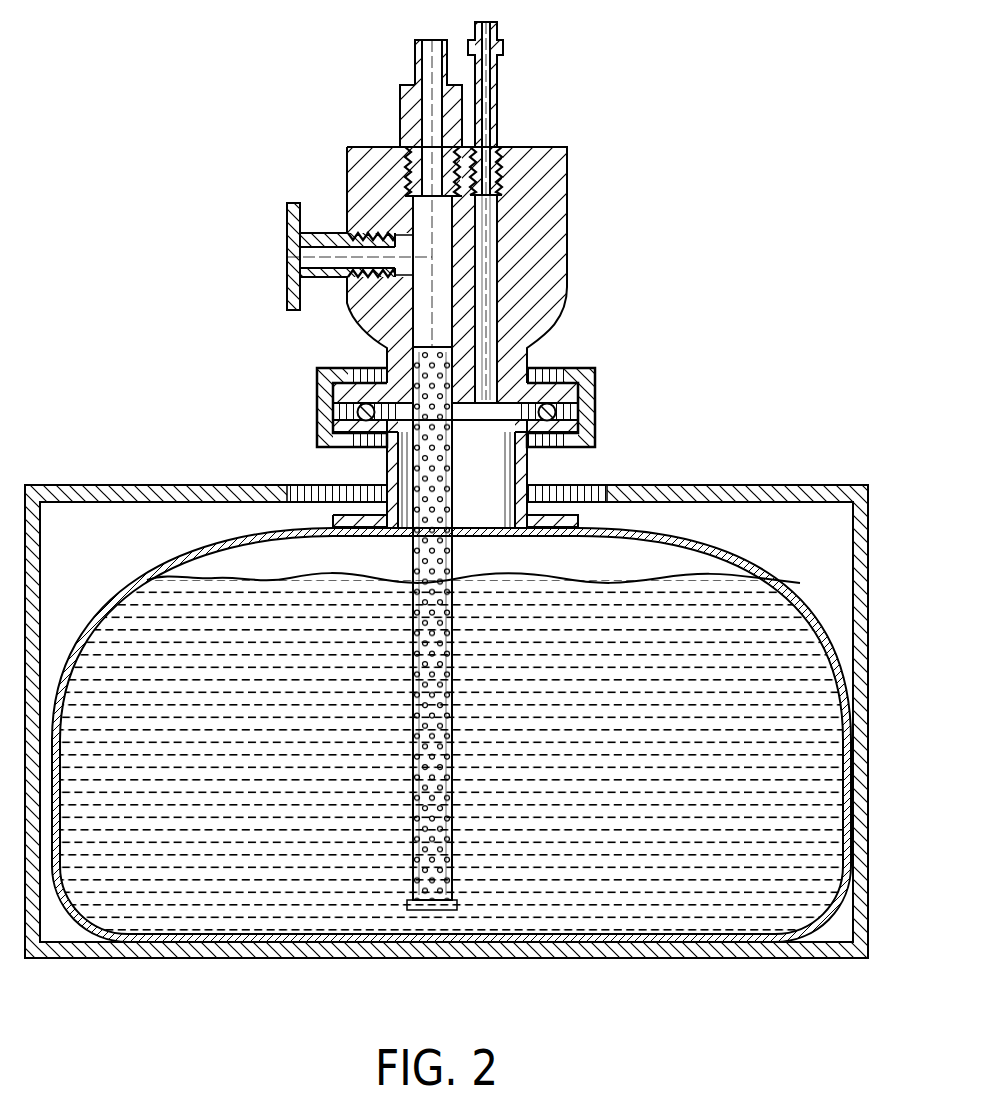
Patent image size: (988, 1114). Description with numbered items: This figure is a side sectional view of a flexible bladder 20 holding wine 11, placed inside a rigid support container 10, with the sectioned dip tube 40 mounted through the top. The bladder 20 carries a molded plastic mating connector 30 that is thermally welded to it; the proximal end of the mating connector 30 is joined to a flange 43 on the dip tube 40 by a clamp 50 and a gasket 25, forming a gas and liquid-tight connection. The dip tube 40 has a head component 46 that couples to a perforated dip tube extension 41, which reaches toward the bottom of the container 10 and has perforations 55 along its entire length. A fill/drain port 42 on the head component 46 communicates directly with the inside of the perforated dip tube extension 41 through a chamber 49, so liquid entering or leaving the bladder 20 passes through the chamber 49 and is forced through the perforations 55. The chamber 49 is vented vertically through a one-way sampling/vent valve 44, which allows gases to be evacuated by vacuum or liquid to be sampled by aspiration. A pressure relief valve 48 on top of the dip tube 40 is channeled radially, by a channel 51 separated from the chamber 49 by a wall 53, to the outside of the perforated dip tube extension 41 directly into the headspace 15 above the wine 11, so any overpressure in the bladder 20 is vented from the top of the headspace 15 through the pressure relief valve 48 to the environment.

The rigid support container 10 is at (732, 485).
The wine 11 is at (628, 580).
The headspace 15 is at (578, 578).
The flexible bladder 20 is at (805, 606).
The gasket 25 is at (368, 405).
The mating connector 30 is at (387, 470).
The dip tube 40 is at (568, 230).
The perforated dip tube extension 41 is at (413, 837).
The fill/drain port 42 is at (288, 278).
The flange 43 is at (550, 390).
The one-way sampling/vent valve 44 is at (413, 77).
The head component 46 is at (428, 253).
The pressure relief valve 48 is at (505, 47).
The chamber 49 is at (347, 193).
The clamp 50 is at (318, 405).
The channel 51 is at (488, 223).
The wall 53 is at (465, 287).
The perforations 55 is at (432, 757).